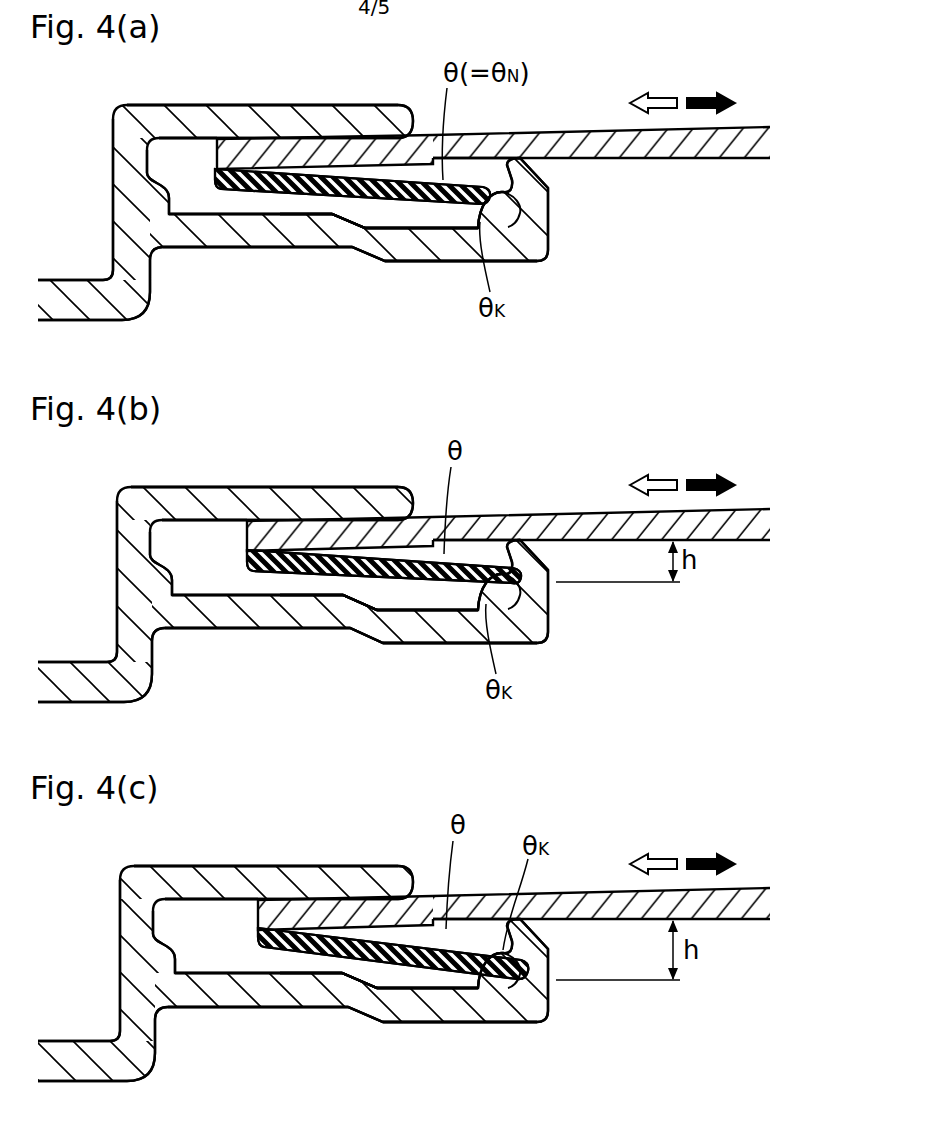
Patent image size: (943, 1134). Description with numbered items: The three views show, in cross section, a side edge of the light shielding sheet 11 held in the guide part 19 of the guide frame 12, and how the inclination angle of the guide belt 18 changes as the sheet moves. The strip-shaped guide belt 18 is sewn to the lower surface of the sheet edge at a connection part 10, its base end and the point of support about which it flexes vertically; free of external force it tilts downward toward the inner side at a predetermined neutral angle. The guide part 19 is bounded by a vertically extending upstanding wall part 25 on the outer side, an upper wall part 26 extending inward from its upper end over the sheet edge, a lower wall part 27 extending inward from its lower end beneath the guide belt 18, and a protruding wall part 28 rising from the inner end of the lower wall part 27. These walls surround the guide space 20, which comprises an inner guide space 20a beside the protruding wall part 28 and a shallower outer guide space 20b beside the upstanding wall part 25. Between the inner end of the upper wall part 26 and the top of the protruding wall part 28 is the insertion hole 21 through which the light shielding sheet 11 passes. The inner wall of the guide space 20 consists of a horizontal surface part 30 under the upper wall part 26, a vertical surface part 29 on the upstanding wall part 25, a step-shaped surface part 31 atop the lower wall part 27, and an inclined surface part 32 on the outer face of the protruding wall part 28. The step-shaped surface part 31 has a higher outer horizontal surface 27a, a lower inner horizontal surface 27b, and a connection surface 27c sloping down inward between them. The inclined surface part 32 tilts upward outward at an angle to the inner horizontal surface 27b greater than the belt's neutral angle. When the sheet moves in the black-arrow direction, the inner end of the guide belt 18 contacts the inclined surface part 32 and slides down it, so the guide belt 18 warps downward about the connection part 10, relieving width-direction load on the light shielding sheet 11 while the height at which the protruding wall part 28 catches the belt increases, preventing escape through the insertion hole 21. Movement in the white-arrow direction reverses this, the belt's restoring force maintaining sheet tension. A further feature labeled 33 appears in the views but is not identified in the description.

In FIG. 4A, the connection part 10 is at (280, 196).
In FIG. 4B, the connection part 10 is at (383, 611).
In FIG. 4C, the connection part 10 is at (379, 989).
In FIG. 4A, the light shielding sheet 11 is at (593, 130).
In FIG. 4B, the light shielding sheet 11 is at (601, 490).
In FIG. 4C, the light shielding sheet 11 is at (601, 867).
In FIG. 4A, the guide frame 12 is at (73, 303).
In FIG. 4B, the guide frame 12 is at (95, 697).
In FIG. 4C, the guide frame 12 is at (96, 1072).
In FIG. 4A, the guide belt 18 is at (486, 200).
In FIG. 4B, the guide belt 18 is at (476, 525).
In FIG. 4C, the guide belt 18 is at (476, 900).
In FIG. 4A, the guide part 19 is at (248, 101).
In FIG. 4B, the guide part 19 is at (264, 453).
In FIG. 4C, the guide part 19 is at (266, 832).
In FIG. 4A, the guide space 20 is at (163, 160).
In FIG. 4B, the guide space 20 is at (293, 566).
In FIG. 4C, the guide space 20 is at (293, 945).
In FIG. 4A, the inner guide space 20a is at (404, 133).
In FIG. 4B, the inner guide space 20a is at (340, 497).
In FIG. 4C, the inner guide space 20a is at (345, 877).
In FIG. 4A, the outer guide space 20b is at (203, 196).
In FIG. 4B, the outer guide space 20b is at (344, 644).
In FIG. 4C, the outer guide space 20b is at (346, 1023).
In FIG. 4A, the insertion hole 21 is at (427, 114).
In FIG. 4B, the insertion hole 21 is at (384, 492).
In FIG. 4C, the insertion hole 21 is at (393, 879).
In FIG. 4A, the upstanding wall part 25 is at (122, 165).
In FIG. 4B, the upstanding wall part 25 is at (104, 576).
In FIG. 4C, the upstanding wall part 25 is at (107, 955).
In FIG. 4A, the upper wall part 26 is at (303, 124).
In FIG. 4B, the upper wall part 26 is at (272, 479).
In FIG. 4C, the upper wall part 26 is at (273, 858).
In FIG. 4A, the lower wall part 27 is at (202, 240).
In FIG. 4B, the lower wall part 27 is at (351, 639).
In FIG. 4C, the lower wall part 27 is at (352, 1018).
In FIG. 4A, the outer horizontal surface 27a is at (303, 218).
In FIG. 4B, the outer horizontal surface 27a is at (311, 642).
In FIG. 4C, the outer horizontal surface 27a is at (311, 1021).
In FIG. 4A, the inner horizontal surface 27b is at (425, 236).
In FIG. 4B, the inner horizontal surface 27b is at (427, 651).
In FIG. 4C, the inner horizontal surface 27b is at (427, 1030).
In FIG. 4A, the connection surface 27c is at (367, 232).
In FIG. 4B, the connection surface 27c is at (367, 645).
In FIG. 4C, the connection surface 27c is at (368, 1024).
In FIG. 4A, the protruding wall part 28 is at (537, 188).
In FIG. 4B, the protruding wall part 28 is at (501, 591).
In FIG. 4C, the protruding wall part 28 is at (503, 970).
In FIG. 4A, the vertical surface part 29 is at (167, 216).
In FIG. 4B, the vertical surface part 29 is at (168, 632).
In FIG. 4C, the vertical surface part 29 is at (171, 1010).
In FIG. 4A, the horizontal surface part 30 is at (183, 140).
In FIG. 4B, the horizontal surface part 30 is at (204, 484).
In FIG. 4C, the horizontal surface part 30 is at (211, 863).
In FIG. 4A, the step-shaped surface part 31 is at (452, 312).
In FIG. 4B, the step-shaped surface part 31 is at (379, 665).
In FIG. 4C, the step-shaped surface part 31 is at (379, 1044).
In FIG. 4A, the inclined surface part 32 is at (522, 212).
In FIG. 4B, the inclined surface part 32 is at (545, 592).
In FIG. 4C, the inclined surface part 32 is at (546, 964).
In FIG. 4A, the step portion 33 is at (345, 206).
In FIG. 4B, the step portion 33 is at (366, 515).
In FIG. 4C, the step portion 33 is at (367, 894).